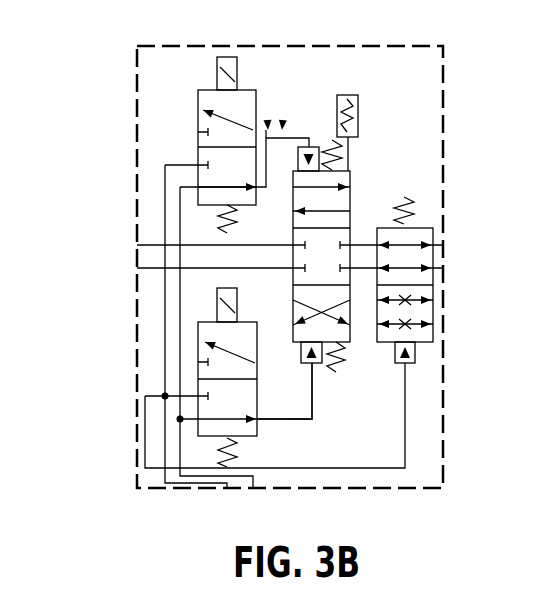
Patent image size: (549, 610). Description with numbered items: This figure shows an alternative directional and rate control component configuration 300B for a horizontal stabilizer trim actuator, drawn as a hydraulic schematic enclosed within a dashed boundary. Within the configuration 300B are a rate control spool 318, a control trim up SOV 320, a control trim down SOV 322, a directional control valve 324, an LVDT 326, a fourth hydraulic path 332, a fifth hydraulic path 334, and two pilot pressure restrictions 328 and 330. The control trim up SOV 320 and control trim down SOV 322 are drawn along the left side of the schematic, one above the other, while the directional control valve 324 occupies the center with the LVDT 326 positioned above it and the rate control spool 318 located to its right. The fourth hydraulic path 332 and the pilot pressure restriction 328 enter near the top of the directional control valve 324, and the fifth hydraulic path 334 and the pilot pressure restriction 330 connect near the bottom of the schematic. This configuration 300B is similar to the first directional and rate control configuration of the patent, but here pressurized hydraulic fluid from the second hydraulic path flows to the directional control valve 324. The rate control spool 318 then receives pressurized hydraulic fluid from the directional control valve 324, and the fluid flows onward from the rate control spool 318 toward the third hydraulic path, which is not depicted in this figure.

The alternative directional and rate control component configuration 300B is at (136, 68).
The rate control spool 318 is at (423, 223).
The control trim up SOV 320 is at (194, 131).
The control trim down SOV 322 is at (195, 347).
The directional control valve 324 is at (357, 167).
The LVDT 326 is at (354, 87).
The pilot pressure restriction 328 is at (282, 128).
The pilot pressure restriction 330 is at (291, 426).
The fourth hydraulic path 332 is at (268, 128).
The fifth hydraulic path 334 is at (316, 406).